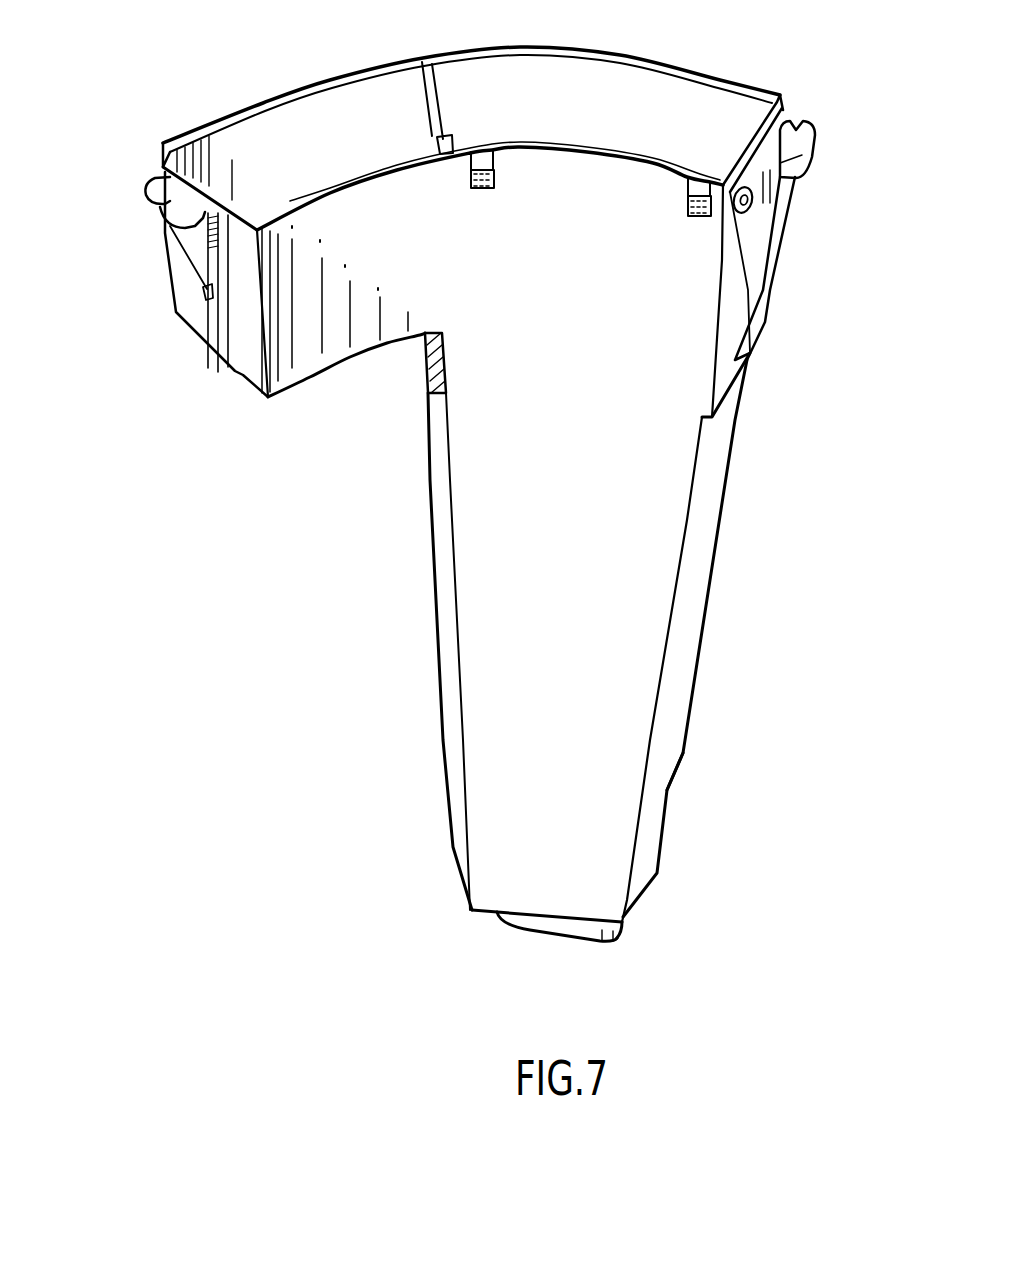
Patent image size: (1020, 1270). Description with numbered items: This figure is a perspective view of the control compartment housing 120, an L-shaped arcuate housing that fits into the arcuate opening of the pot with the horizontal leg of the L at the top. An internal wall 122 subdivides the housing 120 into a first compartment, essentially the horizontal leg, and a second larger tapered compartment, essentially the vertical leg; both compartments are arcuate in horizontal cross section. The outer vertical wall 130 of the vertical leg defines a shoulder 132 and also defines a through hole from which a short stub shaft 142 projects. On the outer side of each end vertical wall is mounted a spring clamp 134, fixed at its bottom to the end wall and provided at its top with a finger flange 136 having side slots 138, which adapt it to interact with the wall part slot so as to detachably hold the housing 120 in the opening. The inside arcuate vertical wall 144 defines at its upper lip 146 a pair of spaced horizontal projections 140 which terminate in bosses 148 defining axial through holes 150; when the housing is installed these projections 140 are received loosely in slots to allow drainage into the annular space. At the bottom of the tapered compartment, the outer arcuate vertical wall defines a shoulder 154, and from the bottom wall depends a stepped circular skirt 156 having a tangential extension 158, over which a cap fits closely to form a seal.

The arcuate housing 120 is at (737, 595).
The internal wall 122 is at (433, 85).
The outer vertical wall 130 is at (717, 475).
The shoulder 132 is at (740, 403).
The spring clamp 134 is at (203, 318).
The finger flange 136 is at (162, 213).
The side slots 138 is at (172, 216).
The horizontal projections 140 is at (483, 153).
The stub shaft 142 is at (732, 261).
The inside arcuate vertical wall 144 is at (576, 313).
The upper lip 146 is at (573, 147).
The bosses 148 is at (480, 190).
The axial through holes 150 is at (463, 178).
The shoulder 154 is at (673, 773).
The depending skirt 156 is at (513, 918).
The tangential extension 158 is at (622, 928).